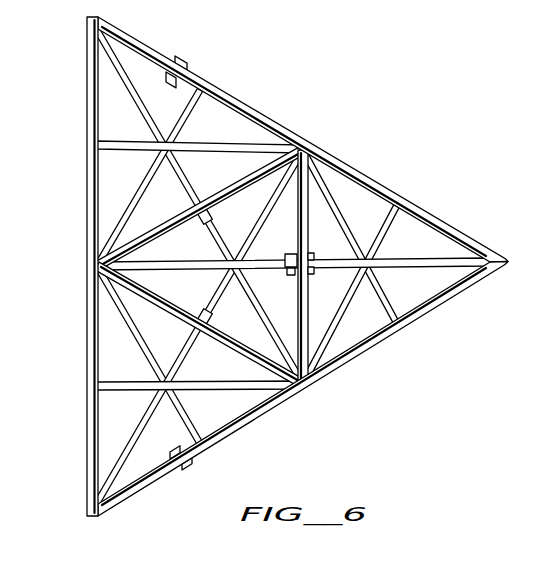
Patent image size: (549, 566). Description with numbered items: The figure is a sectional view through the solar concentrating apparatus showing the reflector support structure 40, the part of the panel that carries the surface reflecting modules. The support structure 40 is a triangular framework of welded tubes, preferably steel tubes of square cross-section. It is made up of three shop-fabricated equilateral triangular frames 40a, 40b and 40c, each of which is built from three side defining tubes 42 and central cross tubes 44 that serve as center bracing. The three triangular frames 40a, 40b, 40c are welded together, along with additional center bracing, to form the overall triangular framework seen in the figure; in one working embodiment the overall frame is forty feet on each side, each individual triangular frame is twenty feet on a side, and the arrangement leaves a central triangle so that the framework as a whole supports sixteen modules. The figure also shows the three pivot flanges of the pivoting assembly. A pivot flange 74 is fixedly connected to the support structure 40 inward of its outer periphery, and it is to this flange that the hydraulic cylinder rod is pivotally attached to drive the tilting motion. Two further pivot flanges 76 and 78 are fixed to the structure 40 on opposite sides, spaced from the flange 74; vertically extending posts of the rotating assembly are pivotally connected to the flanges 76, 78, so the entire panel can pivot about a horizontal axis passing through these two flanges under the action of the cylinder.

The reflector support structure 40 is at (273, 266).
The equilateral triangular frame 40a is at (404, 187).
The equilateral triangular frame 40b is at (78, 147).
The equilateral triangular frame 40c is at (78, 416).
The side defining tube 42 is at (232, 181).
The central cross tube 44 is at (208, 300).
The pivot flange 74 is at (311, 277).
The pivot flange 76 is at (192, 464).
The pivot flange 78 is at (188, 63).